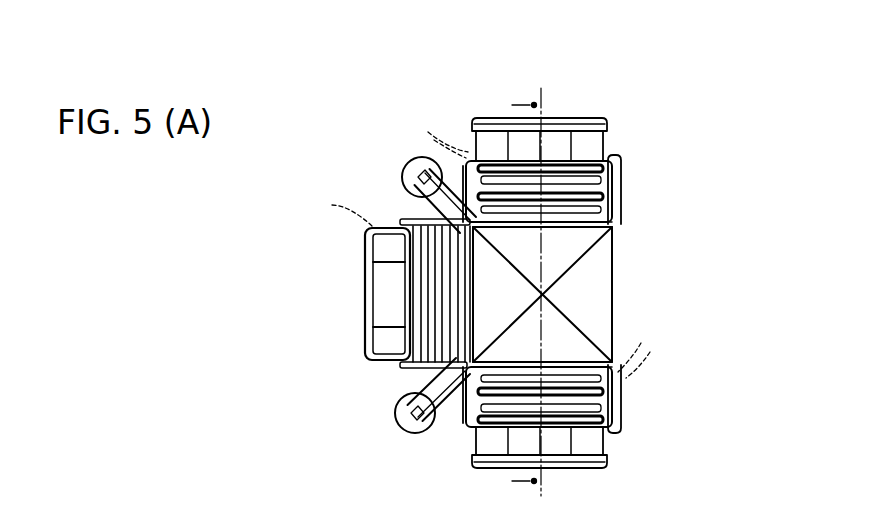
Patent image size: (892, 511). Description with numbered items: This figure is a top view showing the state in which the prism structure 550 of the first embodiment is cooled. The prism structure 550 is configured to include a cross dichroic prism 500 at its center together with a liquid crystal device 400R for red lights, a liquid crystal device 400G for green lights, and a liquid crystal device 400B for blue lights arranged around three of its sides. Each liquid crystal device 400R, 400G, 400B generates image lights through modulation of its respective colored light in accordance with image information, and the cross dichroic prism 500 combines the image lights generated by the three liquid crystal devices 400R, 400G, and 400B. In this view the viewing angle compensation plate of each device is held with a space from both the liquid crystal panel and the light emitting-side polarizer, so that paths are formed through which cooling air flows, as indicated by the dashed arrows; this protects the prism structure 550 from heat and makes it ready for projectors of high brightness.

The prism structure 550 is at (772, 117).
The cross dichroic prism 500 is at (613, 243).
The liquid crystal device for red lights 400R is at (628, 183).
The liquid crystal device for blue lights 400B is at (628, 405).
The liquid crystal device for green lights 400G is at (392, 383).